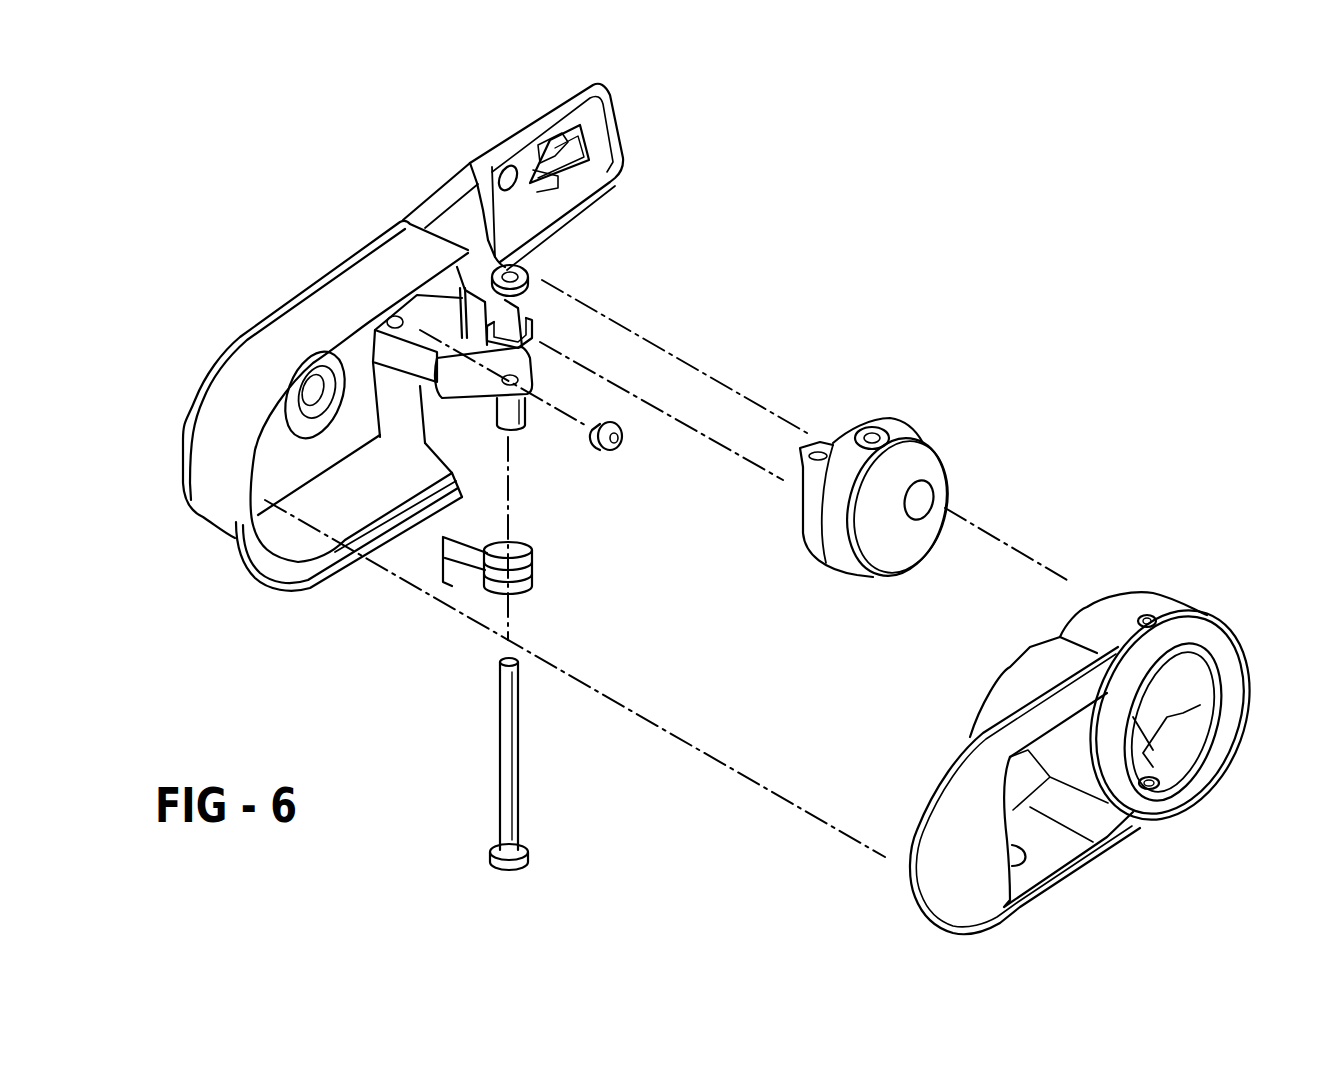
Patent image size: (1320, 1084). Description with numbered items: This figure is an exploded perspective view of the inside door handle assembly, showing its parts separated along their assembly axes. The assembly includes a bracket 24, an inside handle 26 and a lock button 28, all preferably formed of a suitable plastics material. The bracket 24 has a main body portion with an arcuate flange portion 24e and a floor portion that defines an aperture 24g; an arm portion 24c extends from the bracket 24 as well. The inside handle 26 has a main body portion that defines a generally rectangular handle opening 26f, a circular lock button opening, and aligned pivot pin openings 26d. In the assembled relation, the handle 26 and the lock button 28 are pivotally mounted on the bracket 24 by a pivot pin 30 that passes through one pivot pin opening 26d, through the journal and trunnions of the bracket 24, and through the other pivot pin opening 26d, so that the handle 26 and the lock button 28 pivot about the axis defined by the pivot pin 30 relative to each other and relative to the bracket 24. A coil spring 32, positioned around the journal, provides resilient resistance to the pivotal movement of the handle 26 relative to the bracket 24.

The bracket 24 is at (178, 381).
The arm portion 24c is at (522, 116).
The arcuate flange portion 24e is at (305, 284).
The aperture 24g is at (310, 404).
The inside handle 26 is at (1220, 598).
The pivot pin openings 26d is at (1146, 616).
The handle opening 26f is at (1013, 847).
The lock button 28 is at (912, 418).
The pivot pin 30 is at (507, 765).
The coil spring 32 is at (555, 545).